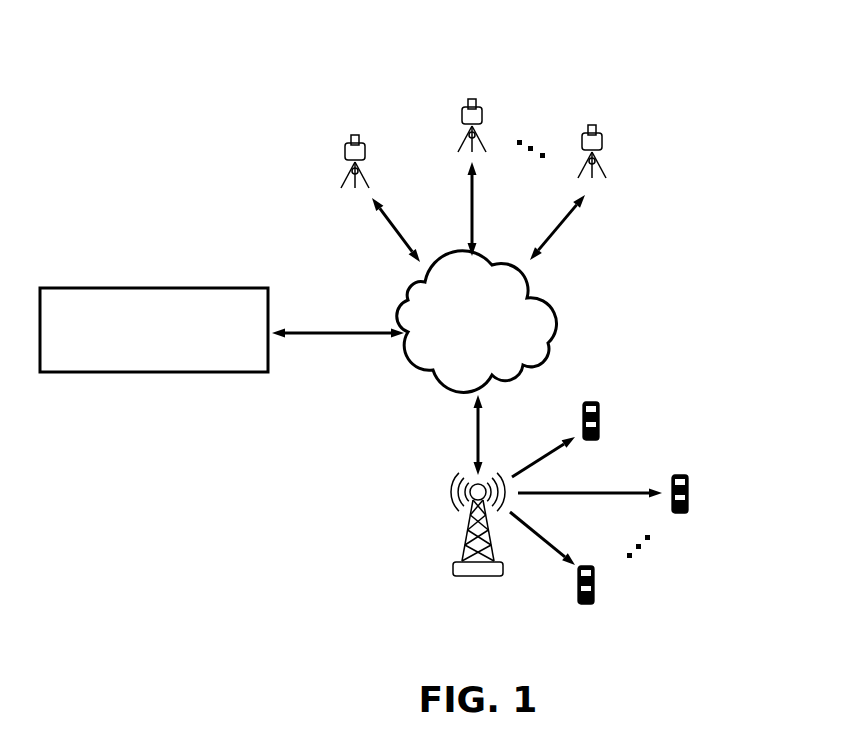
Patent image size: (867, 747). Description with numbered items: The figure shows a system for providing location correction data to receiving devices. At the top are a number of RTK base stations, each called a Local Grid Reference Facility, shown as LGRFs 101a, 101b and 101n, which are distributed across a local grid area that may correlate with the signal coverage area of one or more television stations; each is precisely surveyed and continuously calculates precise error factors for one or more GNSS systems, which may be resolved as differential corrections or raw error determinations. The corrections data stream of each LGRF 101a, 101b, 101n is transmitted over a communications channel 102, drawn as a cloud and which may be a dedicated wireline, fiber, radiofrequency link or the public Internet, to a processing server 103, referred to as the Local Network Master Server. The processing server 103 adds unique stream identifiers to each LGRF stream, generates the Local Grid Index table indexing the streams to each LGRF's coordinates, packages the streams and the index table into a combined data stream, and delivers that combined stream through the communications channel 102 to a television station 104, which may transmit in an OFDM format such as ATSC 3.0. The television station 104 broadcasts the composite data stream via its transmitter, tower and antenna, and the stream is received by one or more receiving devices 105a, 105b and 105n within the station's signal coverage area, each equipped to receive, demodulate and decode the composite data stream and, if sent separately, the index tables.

The Local Grid Reference Facility 101a is at (343, 130).
The Local Grid Reference Facility 101b is at (472, 100).
The Local Grid Reference Facility 101n is at (595, 126).
The communications channel 102 is at (477, 322).
The processing server 103 is at (222, 330).
The television station 104 is at (460, 533).
The receiving device 105a is at (603, 420).
The receiving device 105b is at (693, 494).
The receiving device 105n is at (601, 585).